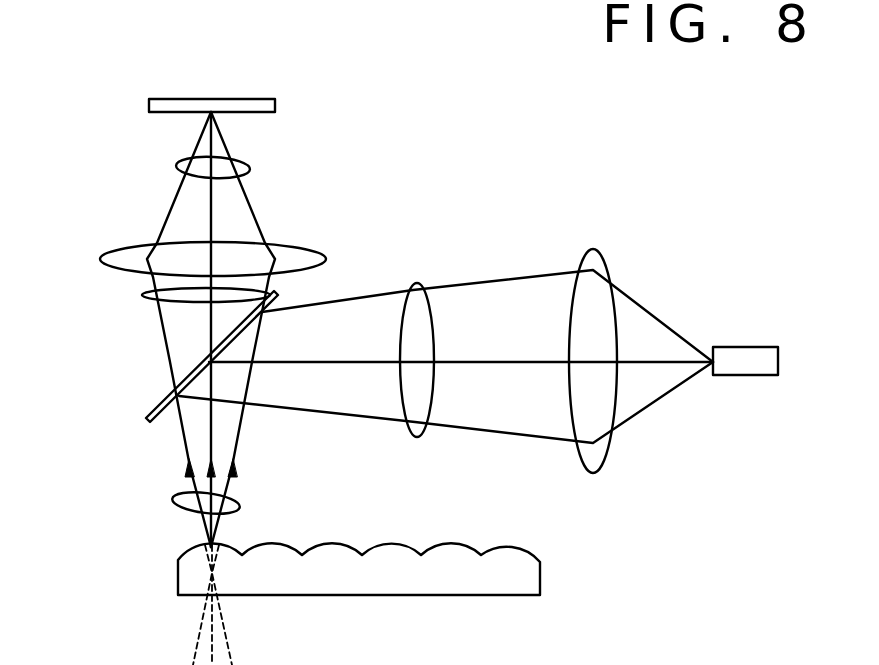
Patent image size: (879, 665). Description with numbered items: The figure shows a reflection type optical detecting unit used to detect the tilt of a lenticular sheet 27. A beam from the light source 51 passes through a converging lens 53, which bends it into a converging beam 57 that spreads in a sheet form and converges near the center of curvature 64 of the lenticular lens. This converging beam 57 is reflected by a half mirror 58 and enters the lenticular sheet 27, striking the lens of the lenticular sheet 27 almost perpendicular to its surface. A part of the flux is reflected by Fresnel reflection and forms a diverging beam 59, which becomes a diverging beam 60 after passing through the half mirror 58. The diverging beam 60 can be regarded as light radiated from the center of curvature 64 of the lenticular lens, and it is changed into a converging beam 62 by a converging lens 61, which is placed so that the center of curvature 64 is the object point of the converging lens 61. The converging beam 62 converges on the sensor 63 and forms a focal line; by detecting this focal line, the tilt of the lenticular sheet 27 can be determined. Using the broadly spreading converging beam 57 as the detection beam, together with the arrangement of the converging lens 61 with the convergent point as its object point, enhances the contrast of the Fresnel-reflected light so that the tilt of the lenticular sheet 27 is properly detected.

The lenticular sheet 27 is at (178, 594).
The light source 51 is at (748, 347).
The converging lens 53 is at (592, 248).
The converging beam 57 is at (413, 283).
The half mirror 58 is at (146, 421).
The diverging beam 59 is at (240, 506).
The diverging beam 60 is at (143, 296).
The converging lens 61 is at (100, 259).
The converging beam 62 is at (176, 168).
The sensor 63 is at (276, 103).
The center of curvature 64 is at (212, 573).